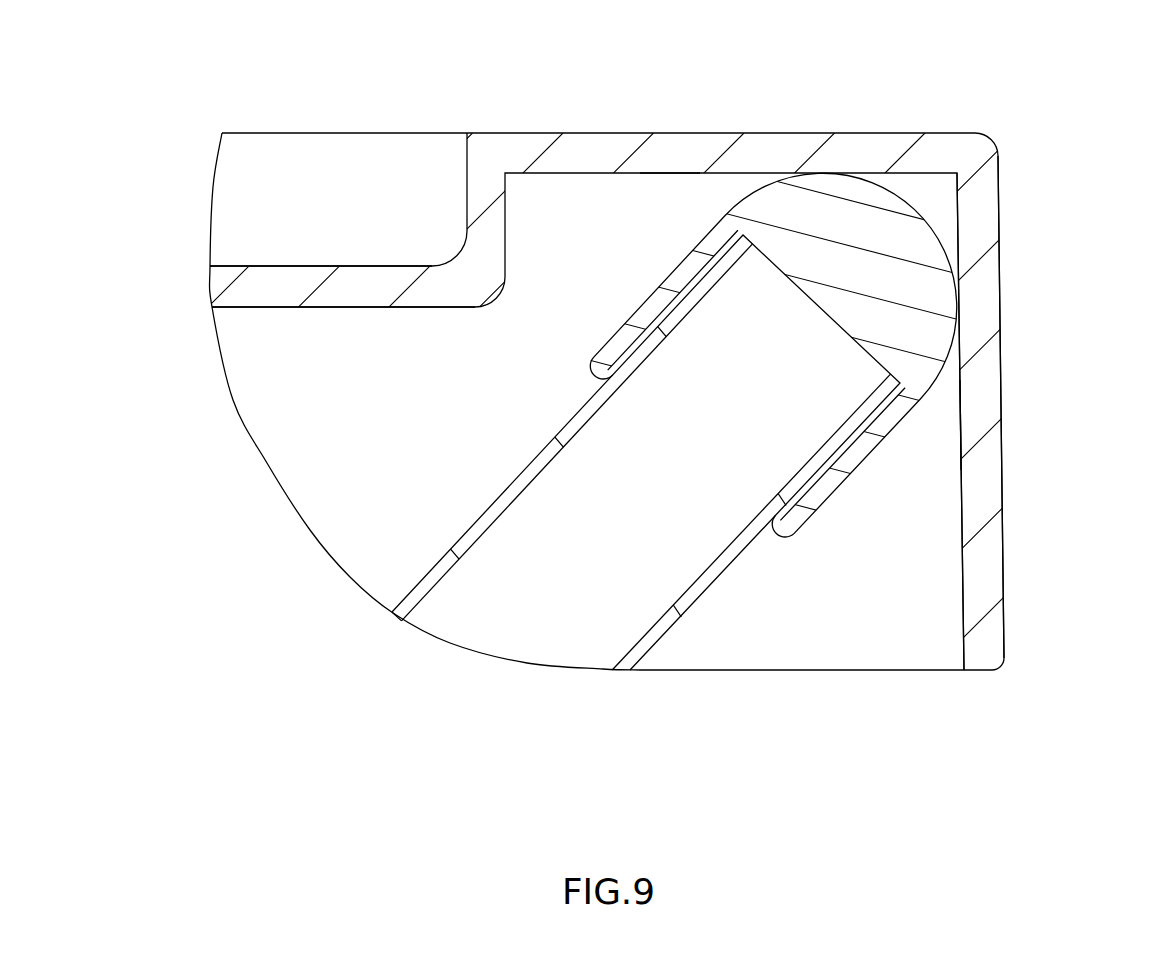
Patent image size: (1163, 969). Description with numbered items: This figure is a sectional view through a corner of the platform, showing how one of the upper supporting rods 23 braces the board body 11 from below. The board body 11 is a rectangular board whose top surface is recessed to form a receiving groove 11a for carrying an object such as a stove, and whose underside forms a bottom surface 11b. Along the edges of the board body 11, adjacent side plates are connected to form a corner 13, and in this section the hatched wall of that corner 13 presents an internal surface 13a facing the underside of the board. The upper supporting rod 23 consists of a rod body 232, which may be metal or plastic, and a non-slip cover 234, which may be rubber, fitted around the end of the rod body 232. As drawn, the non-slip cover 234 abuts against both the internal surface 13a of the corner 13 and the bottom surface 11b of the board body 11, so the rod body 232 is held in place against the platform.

The board body 11 is at (783, 150).
The receiving groove 11a is at (318, 264).
The bottom surface 11b is at (675, 173).
The corner 13 is at (988, 555).
The internal surface 13a is at (946, 420).
The upper supporting rod 23 is at (743, 456).
The rod body 232 is at (700, 597).
The non-slip cover 234 is at (906, 358).